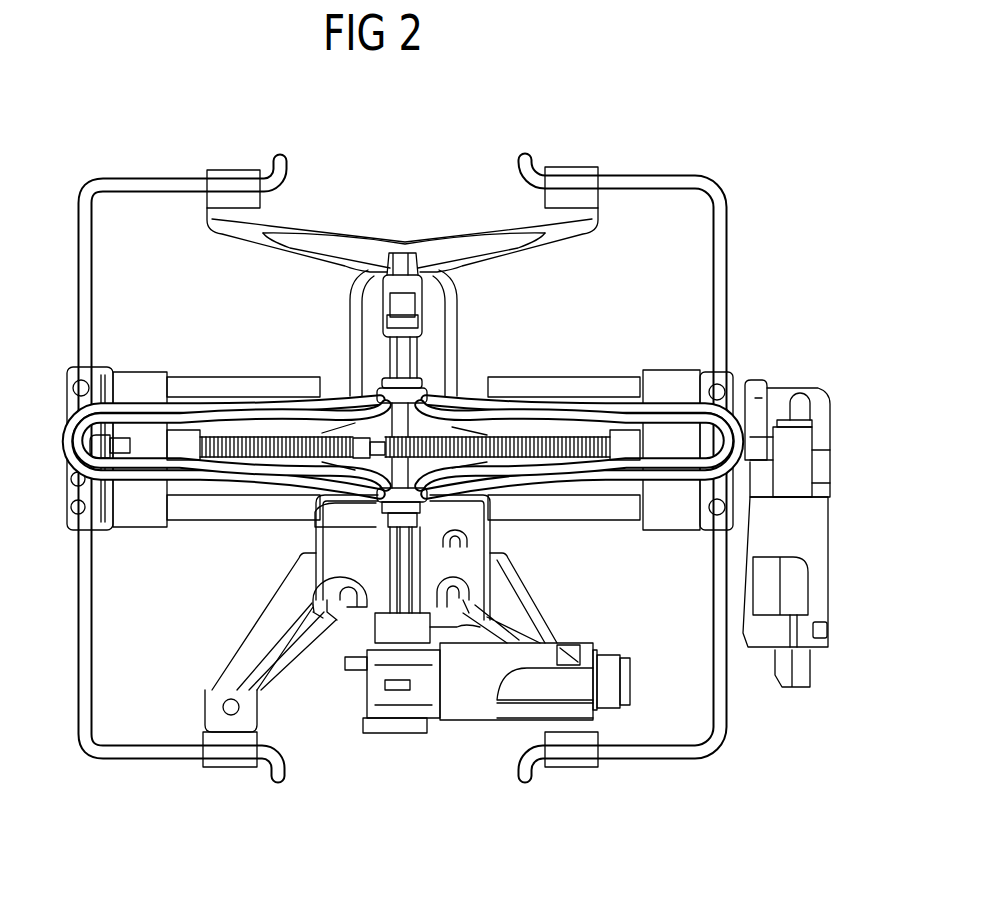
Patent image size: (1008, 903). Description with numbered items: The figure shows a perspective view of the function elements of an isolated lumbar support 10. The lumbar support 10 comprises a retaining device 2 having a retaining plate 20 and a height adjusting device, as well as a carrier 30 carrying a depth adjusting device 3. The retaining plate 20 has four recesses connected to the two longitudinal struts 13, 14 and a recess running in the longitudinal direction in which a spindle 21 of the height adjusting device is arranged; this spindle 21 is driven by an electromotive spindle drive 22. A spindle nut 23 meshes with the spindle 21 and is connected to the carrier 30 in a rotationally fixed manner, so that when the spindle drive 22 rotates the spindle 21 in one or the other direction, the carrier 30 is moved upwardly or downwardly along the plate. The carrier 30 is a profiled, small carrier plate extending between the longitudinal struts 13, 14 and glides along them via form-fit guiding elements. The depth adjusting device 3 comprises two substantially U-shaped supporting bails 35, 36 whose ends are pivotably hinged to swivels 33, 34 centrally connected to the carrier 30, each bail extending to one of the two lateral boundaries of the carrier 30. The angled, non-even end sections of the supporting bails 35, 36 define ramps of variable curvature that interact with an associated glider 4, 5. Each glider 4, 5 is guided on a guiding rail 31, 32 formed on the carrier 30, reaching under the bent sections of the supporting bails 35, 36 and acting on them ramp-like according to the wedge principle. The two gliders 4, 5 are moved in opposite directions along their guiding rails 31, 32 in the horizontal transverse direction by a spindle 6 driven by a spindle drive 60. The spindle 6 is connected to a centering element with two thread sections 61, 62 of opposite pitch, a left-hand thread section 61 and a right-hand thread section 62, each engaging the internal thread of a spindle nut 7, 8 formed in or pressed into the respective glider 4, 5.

The retaining device 2 is at (348, 309).
The depth adjusting device 3 is at (240, 488).
The glider 4 is at (138, 378).
The glider 5 is at (658, 390).
The spindle 6 is at (213, 459).
The spindle nut 7 is at (182, 438).
The spindle nut 8 is at (627, 457).
The lumbar support 10 is at (378, 202).
The longitudinal strut 13 is at (88, 266).
The longitudinal strut 14 is at (723, 235).
The retaining plate 20 is at (367, 348).
The spindle 21 is at (401, 359).
The spindle drive 22 is at (477, 715).
The spindle nut 23 is at (412, 521).
The carrier 30 is at (522, 432).
The guiding rail 31 is at (227, 383).
The guiding rail 32 is at (597, 512).
The swivel 33 is at (437, 388).
The swivel 34 is at (373, 507).
The supporting bail 35 is at (168, 478).
The supporting bail 36 is at (580, 418).
The spindle drive 60 is at (822, 545).
The thread section 61 is at (290, 458).
The thread section 62 is at (560, 458).